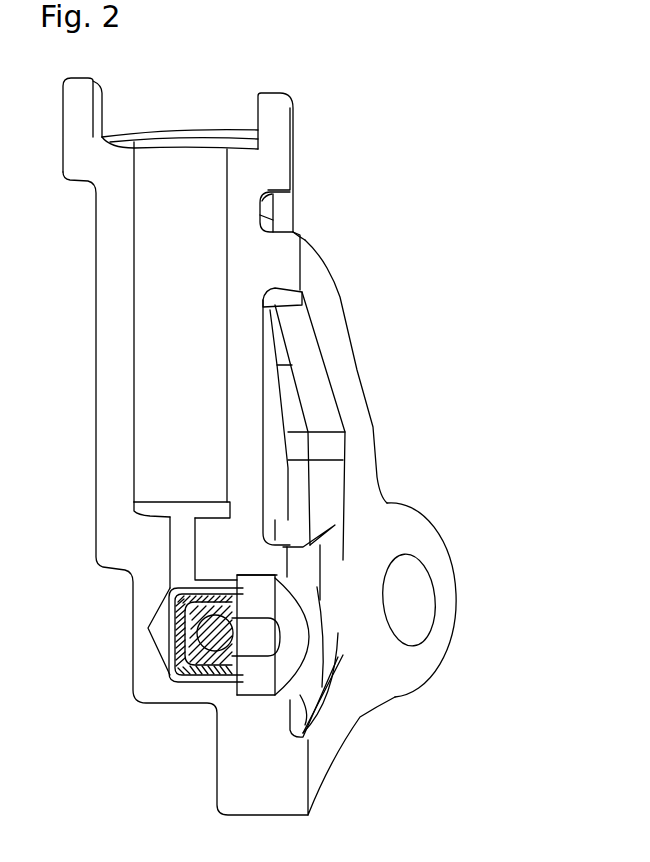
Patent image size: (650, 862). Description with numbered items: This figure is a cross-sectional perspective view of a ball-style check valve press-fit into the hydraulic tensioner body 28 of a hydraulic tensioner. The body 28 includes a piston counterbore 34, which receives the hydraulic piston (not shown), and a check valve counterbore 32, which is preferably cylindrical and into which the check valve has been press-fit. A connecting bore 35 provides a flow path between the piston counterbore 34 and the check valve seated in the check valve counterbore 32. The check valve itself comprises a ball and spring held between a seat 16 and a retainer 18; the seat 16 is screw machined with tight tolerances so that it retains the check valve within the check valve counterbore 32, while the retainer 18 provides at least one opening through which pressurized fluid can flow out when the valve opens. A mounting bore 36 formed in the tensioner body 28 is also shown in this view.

The hydraulic tensioner body 28 is at (128, 537).
The piston counterbore 34 is at (182, 250).
The connecting bore 35 is at (187, 548).
The retainer 18 is at (210, 666).
The check valve counterbore 32 is at (272, 695).
The seat 16 is at (298, 640).
The mounting bore 36 is at (405, 590).